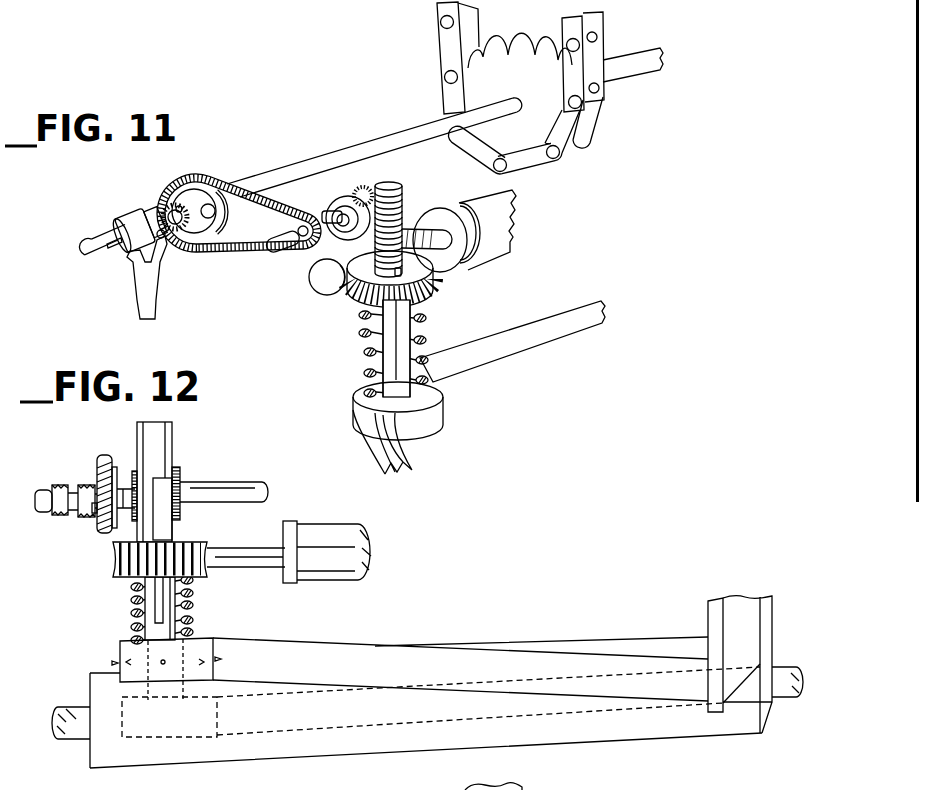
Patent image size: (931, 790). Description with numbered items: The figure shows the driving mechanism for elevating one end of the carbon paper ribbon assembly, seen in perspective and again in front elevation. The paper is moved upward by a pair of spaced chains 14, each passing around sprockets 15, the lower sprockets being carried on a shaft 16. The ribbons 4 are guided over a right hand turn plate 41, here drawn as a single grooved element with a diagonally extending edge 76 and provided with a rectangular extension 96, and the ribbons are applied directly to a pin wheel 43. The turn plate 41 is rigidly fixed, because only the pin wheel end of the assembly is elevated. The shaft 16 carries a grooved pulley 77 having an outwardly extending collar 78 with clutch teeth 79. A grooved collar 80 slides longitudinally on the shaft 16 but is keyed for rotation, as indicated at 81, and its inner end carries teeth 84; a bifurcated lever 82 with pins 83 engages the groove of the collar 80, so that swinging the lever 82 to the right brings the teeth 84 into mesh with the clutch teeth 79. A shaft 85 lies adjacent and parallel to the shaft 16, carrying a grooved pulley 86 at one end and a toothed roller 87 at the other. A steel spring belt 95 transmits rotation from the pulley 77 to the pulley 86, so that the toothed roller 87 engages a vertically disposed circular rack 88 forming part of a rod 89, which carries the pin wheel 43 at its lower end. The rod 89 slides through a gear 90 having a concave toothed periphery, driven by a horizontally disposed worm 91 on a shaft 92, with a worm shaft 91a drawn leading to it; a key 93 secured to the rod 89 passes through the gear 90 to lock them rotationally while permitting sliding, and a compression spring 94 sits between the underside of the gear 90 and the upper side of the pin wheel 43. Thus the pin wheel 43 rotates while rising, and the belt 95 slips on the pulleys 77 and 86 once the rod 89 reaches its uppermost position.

In FIG. 11, the ribbons 4 is at (557, 318).
In FIG. 12, the ribbons 4 is at (334, 652).
In FIG. 11, the chains 14 is at (606, 53).
In FIG. 11, the sprockets 15 is at (524, 86).
In FIG. 11, the shaft 16 is at (345, 162).
In FIG. 12, the shaft 16 is at (237, 482).
In FIG. 12, the turn plate 41 is at (768, 628).
In FIG. 11, the pin wheel 43 is at (427, 430).
In FIG. 12, the pin wheel 43 is at (126, 654).
In FIG. 12, the diagonally extending edge 76 is at (744, 692).
In FIG. 11, the grooved pulley 77 is at (195, 188).
In FIG. 12, the grooved pulley 77 is at (114, 476).
In FIG. 11, the collar 78 is at (205, 220).
In FIG. 12, the collar 78 is at (87, 485).
In FIG. 11, the clutch teeth 79 is at (176, 207).
In FIG. 11, the grooved collar 80 is at (117, 229).
In FIG. 11, the key 81 is at (115, 252).
In FIG. 11, the bifurcated lever 82 is at (142, 313).
In FIG. 11, the pins 83 is at (165, 242).
In FIG. 11, the teeth 84 is at (163, 215).
In FIG. 11, the shaft 85 is at (326, 216).
In FIG. 12, the shaft 85 is at (87, 512).
In FIG. 11, the grooved pulley 86 is at (300, 252).
In FIG. 12, the grooved pulley 86 is at (93, 512).
In FIG. 11, the toothed roller 87 is at (364, 190).
In FIG. 12, the toothed roller 87 is at (182, 471).
In FIG. 11, the circular rack 88 is at (401, 188).
In FIG. 12, the circular rack 88 is at (178, 434).
In FIG. 11, the rod 89 is at (403, 396).
In FIG. 11, the gear 90 is at (434, 284).
In FIG. 12, the gear 90 is at (200, 541).
In FIG. 11, the worm 91 is at (327, 291).
In FIG. 11, the shaft 91a is at (452, 241).
In FIG. 12, the shaft 91a is at (250, 557).
In FIG. 11, the shaft 92 is at (512, 223).
In FIG. 12, the shaft 92 is at (347, 523).
In FIG. 11, the key 93 is at (403, 333).
In FIG. 12, the key 93 is at (158, 605).
In FIG. 11, the compression spring 94 is at (366, 354).
In FIG. 11, the steel spring belt 95 is at (258, 252).
In FIG. 12, the steel spring belt 95 is at (105, 454).
In FIG. 12, the rectangular extension 96 is at (192, 607).